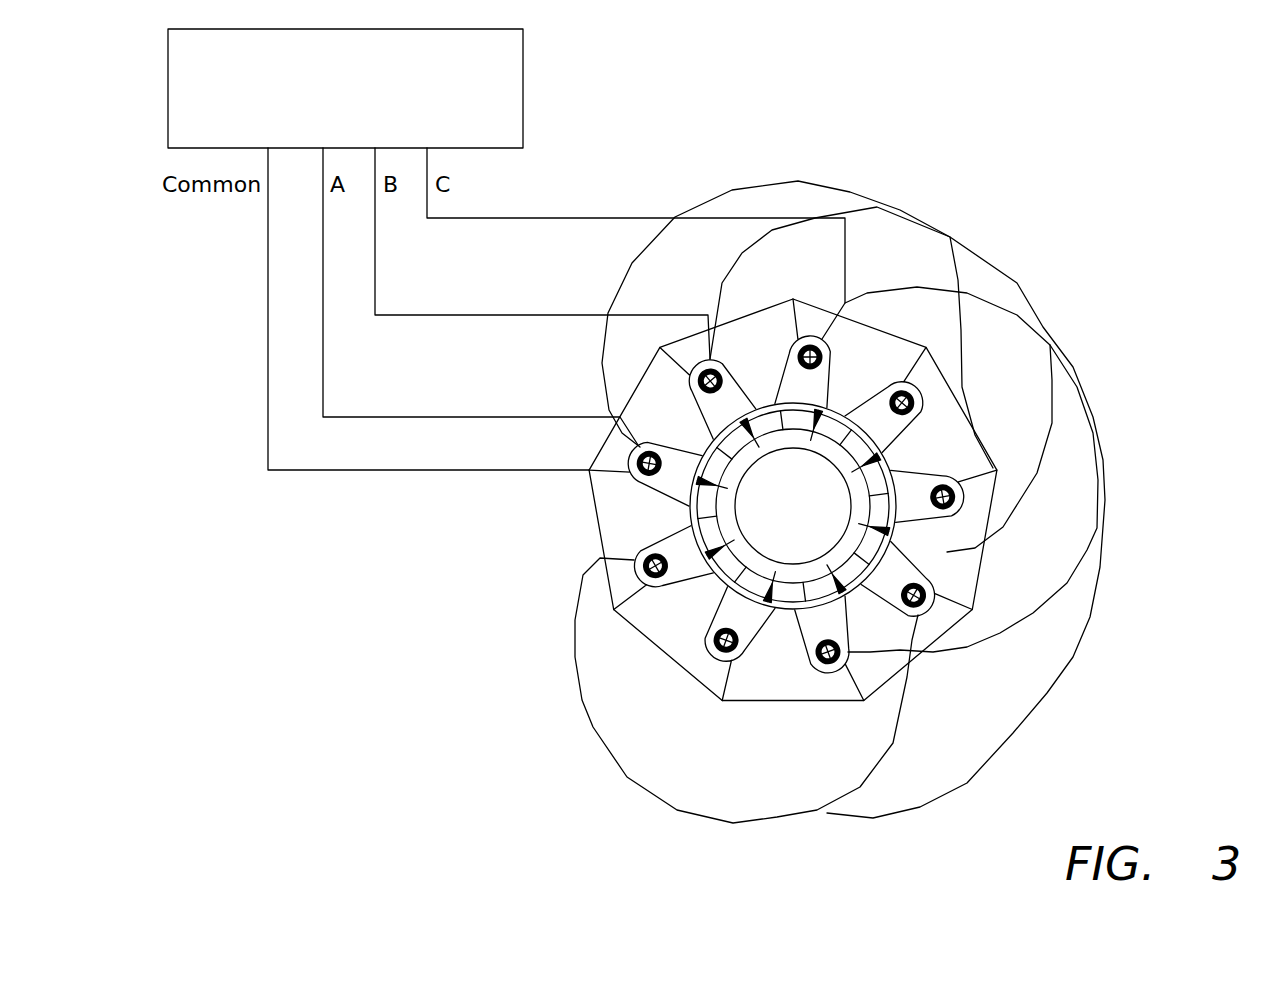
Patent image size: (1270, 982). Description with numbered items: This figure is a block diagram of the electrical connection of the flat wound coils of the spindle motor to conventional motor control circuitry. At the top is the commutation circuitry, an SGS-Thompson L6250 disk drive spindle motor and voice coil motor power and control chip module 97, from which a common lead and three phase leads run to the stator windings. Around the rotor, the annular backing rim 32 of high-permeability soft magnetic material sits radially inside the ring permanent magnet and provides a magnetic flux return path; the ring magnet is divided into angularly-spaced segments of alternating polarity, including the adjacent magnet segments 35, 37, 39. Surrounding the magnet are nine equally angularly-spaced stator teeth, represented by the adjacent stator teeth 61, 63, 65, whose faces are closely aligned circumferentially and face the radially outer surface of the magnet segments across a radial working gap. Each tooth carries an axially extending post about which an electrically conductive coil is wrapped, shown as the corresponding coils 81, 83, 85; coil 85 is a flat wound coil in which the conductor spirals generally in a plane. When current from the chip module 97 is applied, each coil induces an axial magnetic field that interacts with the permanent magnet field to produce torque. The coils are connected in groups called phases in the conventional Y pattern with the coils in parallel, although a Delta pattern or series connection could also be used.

The power and control chip module 97 is at (523, 78).
The backing rim 32 is at (700, 506).
The magnet segment 35 is at (745, 690).
The magnet segment 37 is at (1044, 466).
The magnet segment 39 is at (999, 395).
The stator tooth 61 is at (836, 745).
The stator tooth 63 is at (983, 632).
The stator tooth 65 is at (1035, 487).
The coil 81 is at (873, 741).
The coil 83 is at (1015, 632).
The coil 85 is at (1052, 505).